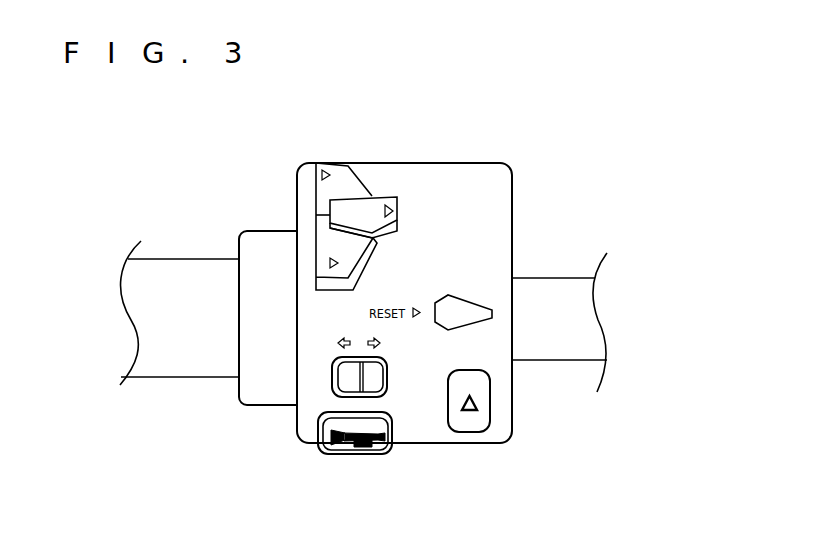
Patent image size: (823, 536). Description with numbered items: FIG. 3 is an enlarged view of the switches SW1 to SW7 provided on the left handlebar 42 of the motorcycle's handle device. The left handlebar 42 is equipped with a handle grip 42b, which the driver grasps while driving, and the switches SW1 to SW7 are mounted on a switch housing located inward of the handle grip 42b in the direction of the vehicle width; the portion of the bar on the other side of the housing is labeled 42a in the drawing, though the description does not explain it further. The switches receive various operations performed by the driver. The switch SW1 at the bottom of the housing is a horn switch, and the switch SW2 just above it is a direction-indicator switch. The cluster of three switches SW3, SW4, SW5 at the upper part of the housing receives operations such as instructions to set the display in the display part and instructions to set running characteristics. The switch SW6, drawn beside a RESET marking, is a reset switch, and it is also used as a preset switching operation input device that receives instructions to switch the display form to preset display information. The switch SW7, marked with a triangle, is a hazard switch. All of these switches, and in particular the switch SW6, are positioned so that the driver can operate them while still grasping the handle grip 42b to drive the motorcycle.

The left handlebar 42 is at (562, 277).
The right grip portion of handlebar 42a is at (580, 320).
The handle grip 42b is at (177, 272).
The horn switch SW1 is at (343, 454).
The direction-indicator switch SW2 is at (388, 378).
The switch SW3 is at (322, 226).
The switch SW4 is at (343, 183).
The switch SW5 is at (378, 200).
The reset switch SW6 is at (484, 313).
The hazard switch SW7 is at (488, 413).